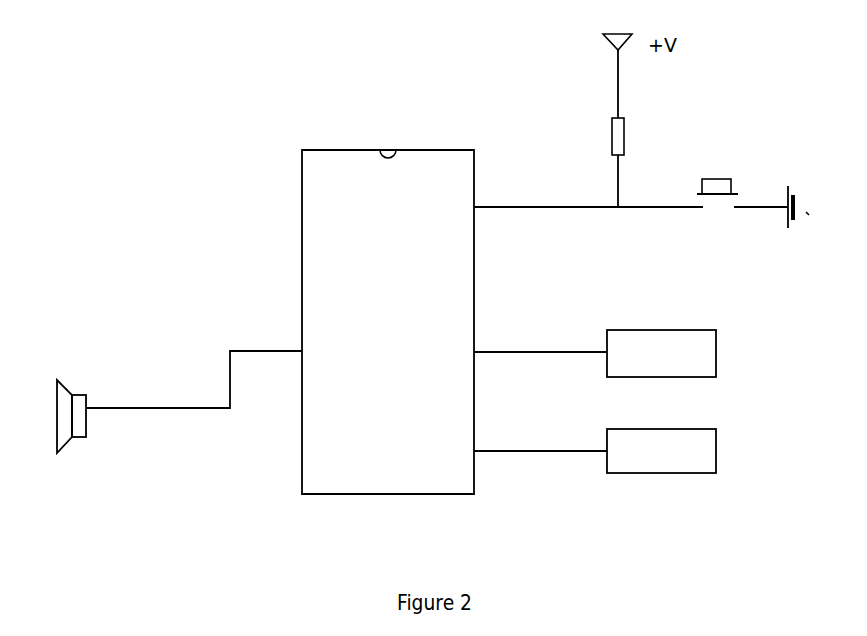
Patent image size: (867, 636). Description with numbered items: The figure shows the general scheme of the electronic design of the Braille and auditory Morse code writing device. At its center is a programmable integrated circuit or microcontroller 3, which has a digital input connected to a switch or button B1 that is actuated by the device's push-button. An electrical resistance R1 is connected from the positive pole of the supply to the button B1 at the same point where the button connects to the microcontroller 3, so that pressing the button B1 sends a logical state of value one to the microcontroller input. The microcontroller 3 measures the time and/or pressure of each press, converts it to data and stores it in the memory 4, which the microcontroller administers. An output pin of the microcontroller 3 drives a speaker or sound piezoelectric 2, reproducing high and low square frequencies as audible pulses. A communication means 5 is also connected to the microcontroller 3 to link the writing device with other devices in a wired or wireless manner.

The sound piezoelectric 2 is at (72, 393).
The microcontroller 3 is at (474, 247).
The memory 4 is at (716, 341).
The communication means 5 is at (716, 448).
The electrical resistance R1 is at (595, 136).
The switch or button B1 is at (731, 182).